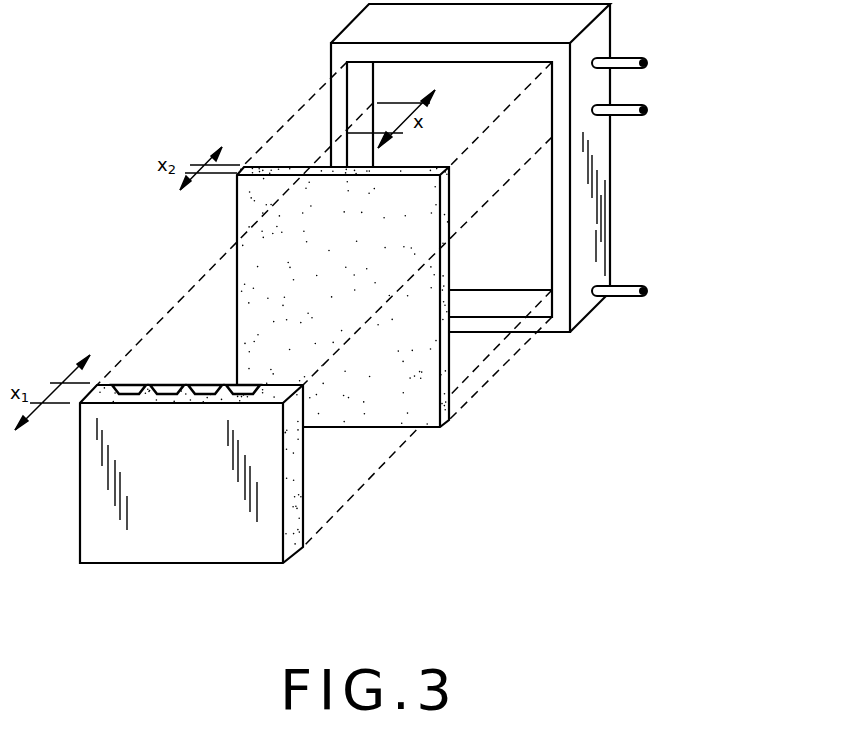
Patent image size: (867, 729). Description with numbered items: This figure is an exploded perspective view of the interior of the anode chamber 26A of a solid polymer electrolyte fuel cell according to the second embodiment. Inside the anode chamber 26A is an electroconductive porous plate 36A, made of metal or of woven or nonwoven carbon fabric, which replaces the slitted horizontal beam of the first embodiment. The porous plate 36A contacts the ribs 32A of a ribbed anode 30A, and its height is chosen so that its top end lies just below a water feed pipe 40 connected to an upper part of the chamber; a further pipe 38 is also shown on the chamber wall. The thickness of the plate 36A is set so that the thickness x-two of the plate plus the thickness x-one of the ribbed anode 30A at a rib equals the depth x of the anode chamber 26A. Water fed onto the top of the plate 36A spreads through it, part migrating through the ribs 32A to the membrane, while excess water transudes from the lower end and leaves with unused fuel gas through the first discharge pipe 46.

The anode chamber 26A is at (582, 307).
The electroconductive porous plate 36A is at (290, 167).
The ribbed anode 30A is at (218, 542).
The ribs 32A is at (157, 385).
The water feed pipe 40 is at (627, 60).
The pin 38 is at (627, 115).
The first discharge pipe 46 is at (628, 287).